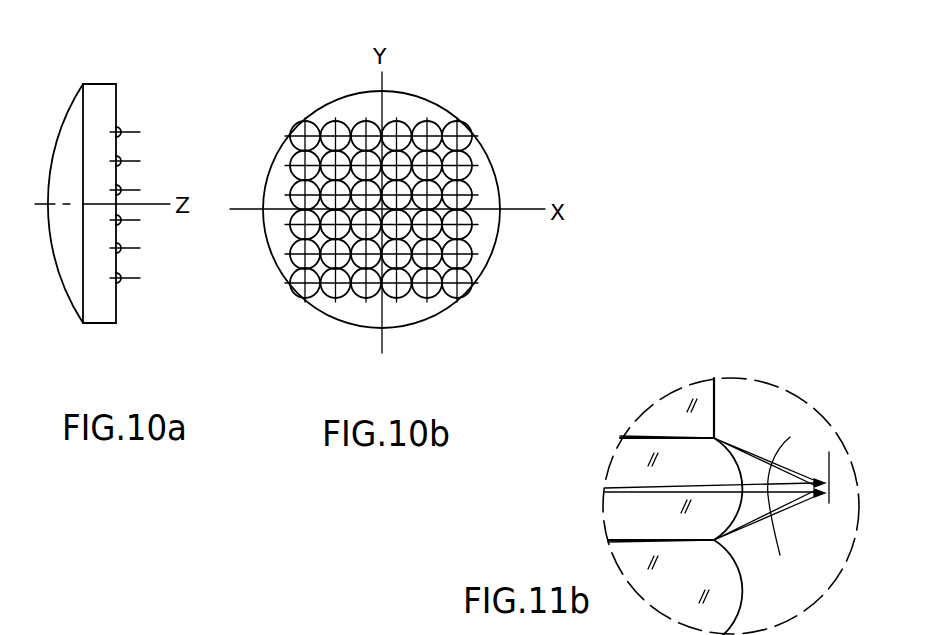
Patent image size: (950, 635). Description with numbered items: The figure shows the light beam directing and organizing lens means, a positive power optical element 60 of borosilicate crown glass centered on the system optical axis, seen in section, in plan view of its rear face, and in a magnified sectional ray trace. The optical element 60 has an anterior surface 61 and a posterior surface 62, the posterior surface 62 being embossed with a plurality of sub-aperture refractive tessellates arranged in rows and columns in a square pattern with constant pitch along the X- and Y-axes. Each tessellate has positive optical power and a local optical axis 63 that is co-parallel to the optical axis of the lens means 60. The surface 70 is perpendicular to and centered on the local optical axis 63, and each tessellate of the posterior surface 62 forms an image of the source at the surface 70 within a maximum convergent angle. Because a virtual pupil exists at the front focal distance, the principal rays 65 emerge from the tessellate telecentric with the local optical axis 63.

In FIG. 10a, the optical element 60 is at (98, 181).
In FIG. 10b, the optical element 60 is at (437, 103).
In FIG. 10a, the anterior surface 61 is at (68, 278).
In FIG. 10a, the posterior surface 62 is at (118, 287).
In FIG. 10b, the posterior surface 62 is at (463, 290).
In FIG. 11b, the posterior surface 62 is at (716, 440).
In FIG. 10a, the local optical axis 63 is at (128, 130).
In FIG. 10b, the local optical axis 63 is at (470, 130).
In FIG. 11b, the local optical axis 63 is at (768, 500).
In FIG. 11b, the principal rays 65 is at (769, 482).
In FIG. 11b, the surface 70 is at (836, 508).